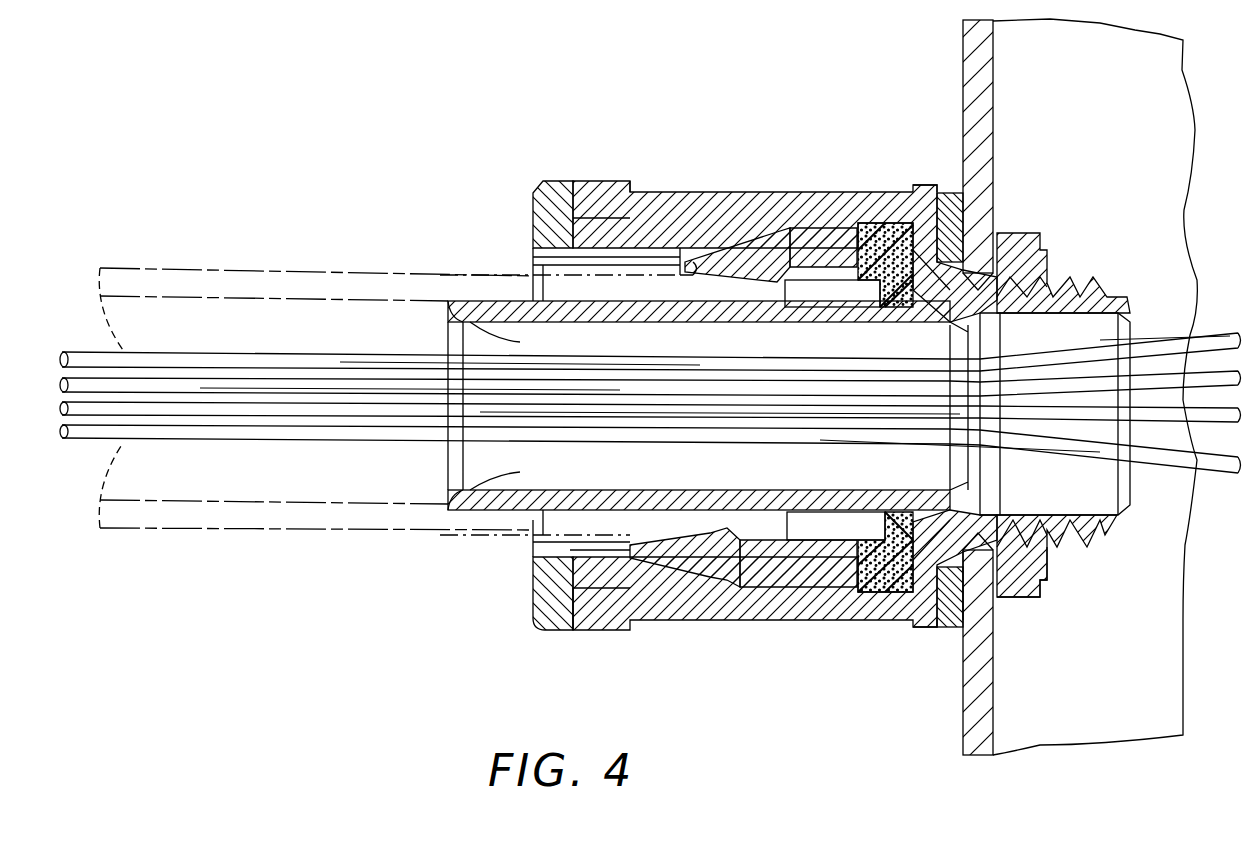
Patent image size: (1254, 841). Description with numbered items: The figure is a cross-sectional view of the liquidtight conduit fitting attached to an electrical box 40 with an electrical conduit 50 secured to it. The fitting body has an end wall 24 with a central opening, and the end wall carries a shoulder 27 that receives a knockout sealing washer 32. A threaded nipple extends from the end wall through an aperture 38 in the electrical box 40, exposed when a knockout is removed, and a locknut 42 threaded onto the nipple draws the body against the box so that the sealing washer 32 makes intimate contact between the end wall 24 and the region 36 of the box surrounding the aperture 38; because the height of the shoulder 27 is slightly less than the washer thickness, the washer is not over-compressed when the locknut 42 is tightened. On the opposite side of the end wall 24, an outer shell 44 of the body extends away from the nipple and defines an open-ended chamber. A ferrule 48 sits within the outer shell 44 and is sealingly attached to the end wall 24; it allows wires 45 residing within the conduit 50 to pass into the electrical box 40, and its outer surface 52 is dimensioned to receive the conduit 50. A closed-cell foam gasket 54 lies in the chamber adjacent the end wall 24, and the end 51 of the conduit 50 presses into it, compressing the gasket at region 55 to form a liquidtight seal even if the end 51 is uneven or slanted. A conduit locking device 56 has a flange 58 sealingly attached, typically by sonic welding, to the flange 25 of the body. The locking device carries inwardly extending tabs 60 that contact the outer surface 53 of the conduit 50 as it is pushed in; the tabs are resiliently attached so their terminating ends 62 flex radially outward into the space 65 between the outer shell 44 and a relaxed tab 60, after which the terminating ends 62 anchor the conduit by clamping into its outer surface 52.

The end wall 24 is at (912, 188).
The flange 25 is at (600, 181).
The shoulder 27 is at (952, 628).
The knockout sealing washer 32 is at (952, 195).
The region 36 is at (993, 630).
The aperture 38 is at (1010, 238).
The electrical box 40 is at (963, 752).
The locknut 42 is at (1040, 587).
The outer shell 44 is at (792, 624).
The wires 45 is at (1232, 345).
The ferrule 48 is at (450, 349).
The conduit 50 is at (372, 270).
The end 51 is at (890, 330).
The outer surface 52 is at (507, 532).
The outer surface 53 is at (748, 608).
The foam gasket 54 is at (866, 224).
The region 55 is at (900, 522).
The conduit locking device 56 is at (645, 216).
The flange 58 is at (552, 192).
The tabs 60 is at (722, 262).
The terminating ends 62 is at (779, 278).
The space 65 is at (703, 230).